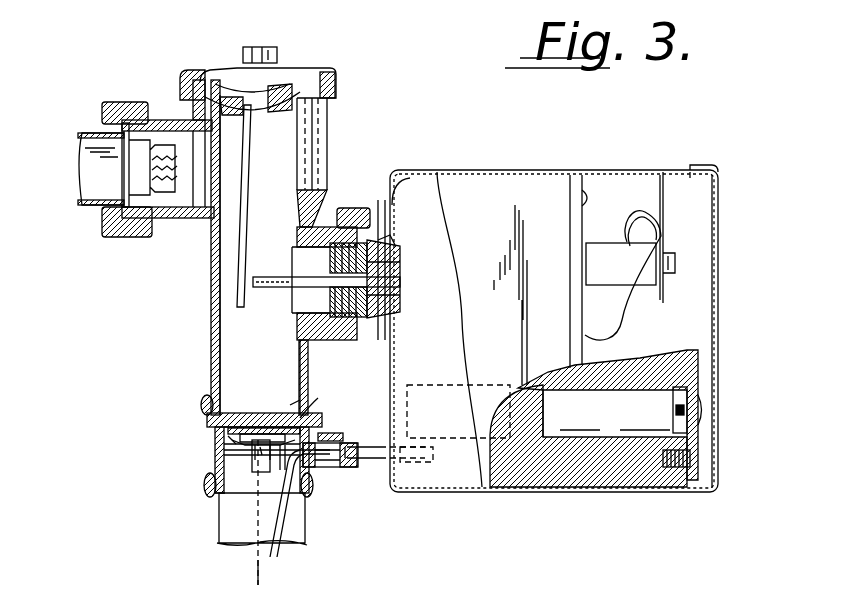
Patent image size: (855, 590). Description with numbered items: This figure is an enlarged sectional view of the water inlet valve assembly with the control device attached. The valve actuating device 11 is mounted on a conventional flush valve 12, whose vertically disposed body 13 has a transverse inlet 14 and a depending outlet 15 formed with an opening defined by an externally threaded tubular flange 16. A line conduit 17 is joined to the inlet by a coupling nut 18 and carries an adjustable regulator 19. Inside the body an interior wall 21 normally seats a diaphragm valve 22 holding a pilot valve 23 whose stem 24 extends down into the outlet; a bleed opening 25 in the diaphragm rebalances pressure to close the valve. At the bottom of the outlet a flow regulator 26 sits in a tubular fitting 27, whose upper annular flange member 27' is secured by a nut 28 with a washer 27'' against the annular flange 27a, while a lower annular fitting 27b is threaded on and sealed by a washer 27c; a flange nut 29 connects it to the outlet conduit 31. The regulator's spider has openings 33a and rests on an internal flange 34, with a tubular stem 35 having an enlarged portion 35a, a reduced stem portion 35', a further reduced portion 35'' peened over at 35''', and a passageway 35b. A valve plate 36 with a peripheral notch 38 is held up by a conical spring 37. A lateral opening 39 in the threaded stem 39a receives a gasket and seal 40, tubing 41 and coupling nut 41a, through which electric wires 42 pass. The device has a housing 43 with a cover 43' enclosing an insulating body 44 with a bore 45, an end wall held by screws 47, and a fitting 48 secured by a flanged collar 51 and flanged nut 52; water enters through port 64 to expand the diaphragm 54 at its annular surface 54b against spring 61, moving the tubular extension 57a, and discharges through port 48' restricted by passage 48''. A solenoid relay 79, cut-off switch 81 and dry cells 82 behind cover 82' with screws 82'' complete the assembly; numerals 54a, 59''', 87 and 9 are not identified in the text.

The valve actuating device 11 is at (483, 164).
The flush valve 12 is at (346, 162).
The body 13 is at (211, 280).
The inlet 14 is at (185, 218).
The outlet 15 is at (213, 350).
The tubular flange 16 is at (335, 340).
The line conduit 17 is at (85, 132).
The coupling nut 18 is at (128, 102).
The regulator 19 is at (110, 215).
The interior wall 21 is at (196, 165).
The diaphragm valve 22 is at (243, 55).
The pilot valve 23 is at (283, 68).
The stem 24 is at (252, 236).
The bleed opening 25 is at (205, 78).
The flow regulator 26 is at (225, 450).
The tubular fitting 27 is at (208, 432).
The upper annular flange member 27' is at (227, 421).
The washer 27'' is at (208, 386).
The annular flange 27a is at (312, 405).
The lower annular fitting 27b is at (210, 495).
The washer 27c is at (228, 438).
The nut 28 is at (202, 398).
The flange nut 29 is at (210, 500).
The outlet conduit 31 is at (222, 545).
The opening 33a is at (300, 405).
The internal flange 34 is at (312, 418).
The tubular stem 35 is at (262, 455).
The reduced stem portion 35' is at (248, 467).
The further reduced portion 35'' is at (260, 404).
The peened-over end 35''' is at (281, 412).
The enlarged portion 35a is at (290, 470).
The passageway 35b is at (263, 575).
The valve plate 36 is at (220, 455).
The spring 37 is at (225, 462).
The peripheral notch 38 is at (312, 468).
The lateral opening 39 is at (338, 433).
The threaded stem 39a is at (312, 440).
The annular gasket and seal 40 is at (315, 490).
The tubing 41 is at (395, 462).
The coupling nut 41a is at (348, 460).
The electric wires 42 is at (283, 562).
The housing 43 is at (695, 354).
The cover 43' is at (740, 331).
The body 44 is at (540, 195).
The bore 45 is at (557, 580).
The screws 47 is at (593, 203).
The fitting 48 is at (384, 287).
The port 48' is at (406, 292).
The passage 48'' is at (406, 268).
The flanged collar 51 is at (384, 195).
The flanged nut 52 is at (352, 208).
The diaphragm 54 is at (384, 589).
The member 54a is at (448, 589).
The annular surface 54b is at (377, 552).
The tubular extension 57a is at (280, 292).
The member 59''' is at (343, 580).
The spring 61 is at (538, 589).
The port 64 is at (380, 262).
The solenoid relay 79 is at (621, 264).
The cut-off switch 81 is at (670, 250).
The dry cells 82 is at (594, 437).
The cover 82' is at (722, 415).
The screws 82'' is at (719, 462).
The wire 87 is at (640, 212).
The member 9 is at (854, 588).